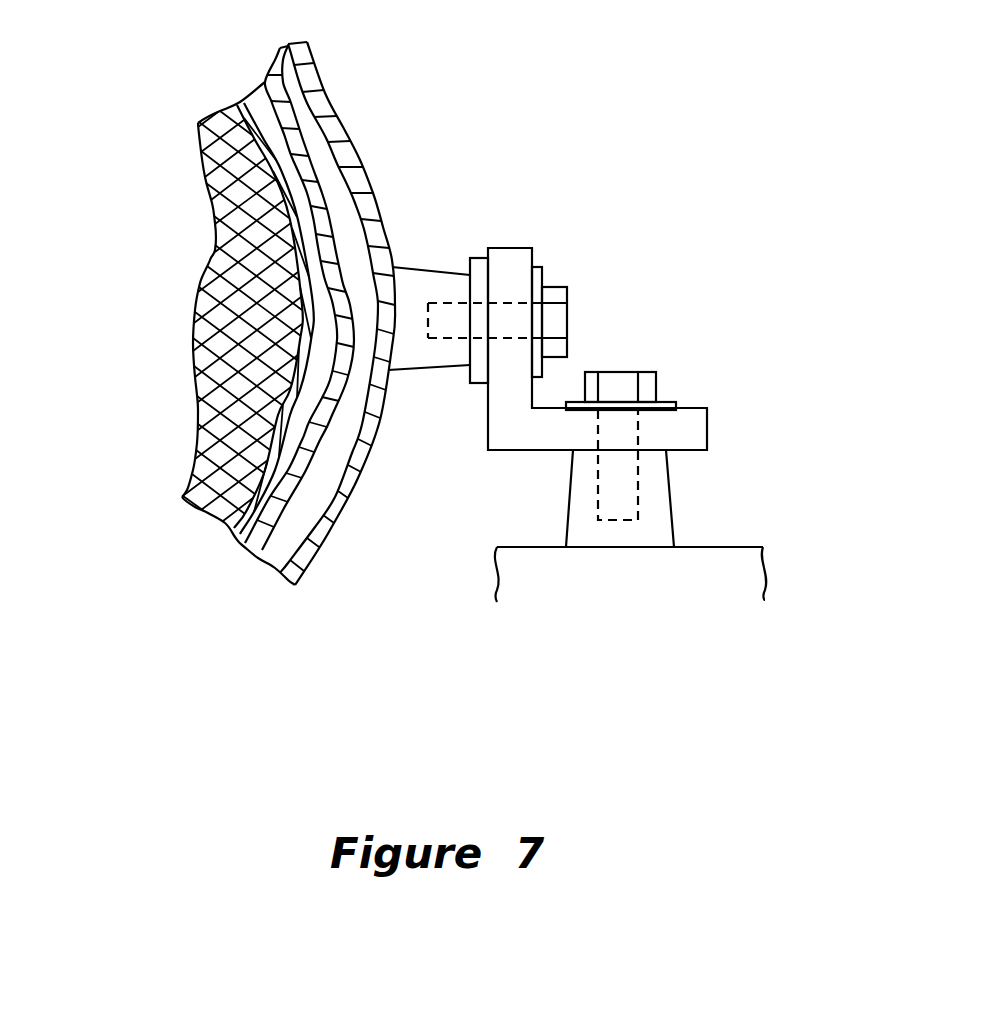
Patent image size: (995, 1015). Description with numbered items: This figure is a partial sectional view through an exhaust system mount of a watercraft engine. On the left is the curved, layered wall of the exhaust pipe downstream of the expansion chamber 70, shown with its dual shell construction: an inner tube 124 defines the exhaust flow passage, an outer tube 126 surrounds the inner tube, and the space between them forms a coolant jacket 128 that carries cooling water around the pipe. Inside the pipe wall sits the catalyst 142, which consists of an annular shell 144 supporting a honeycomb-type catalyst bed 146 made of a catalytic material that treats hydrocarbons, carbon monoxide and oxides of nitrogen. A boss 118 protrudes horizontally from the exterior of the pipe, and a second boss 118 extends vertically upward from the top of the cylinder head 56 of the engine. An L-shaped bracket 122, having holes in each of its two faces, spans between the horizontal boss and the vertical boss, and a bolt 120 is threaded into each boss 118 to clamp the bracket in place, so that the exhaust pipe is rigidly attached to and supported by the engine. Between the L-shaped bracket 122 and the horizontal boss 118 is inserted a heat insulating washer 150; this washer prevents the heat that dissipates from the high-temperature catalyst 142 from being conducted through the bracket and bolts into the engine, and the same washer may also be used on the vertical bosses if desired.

The cylinder head 56 is at (747, 547).
The expansion chamber 70 is at (353, 123).
The bosses 118 is at (407, 268).
The bolt 120 is at (622, 370).
The L-shaped bracket 122 is at (487, 402).
The inner tube 124 is at (285, 517).
The outer tube 126 is at (358, 475).
The coolant jacket 128 is at (320, 500).
The catalyst 142 is at (179, 371).
The annular shell 144 is at (238, 520).
The catalyst bed 146 is at (203, 497).
The heat insulating washer 150 is at (468, 272).